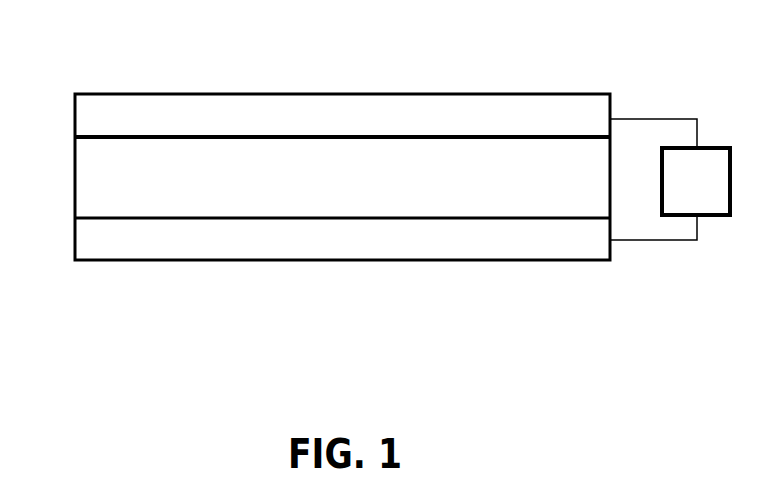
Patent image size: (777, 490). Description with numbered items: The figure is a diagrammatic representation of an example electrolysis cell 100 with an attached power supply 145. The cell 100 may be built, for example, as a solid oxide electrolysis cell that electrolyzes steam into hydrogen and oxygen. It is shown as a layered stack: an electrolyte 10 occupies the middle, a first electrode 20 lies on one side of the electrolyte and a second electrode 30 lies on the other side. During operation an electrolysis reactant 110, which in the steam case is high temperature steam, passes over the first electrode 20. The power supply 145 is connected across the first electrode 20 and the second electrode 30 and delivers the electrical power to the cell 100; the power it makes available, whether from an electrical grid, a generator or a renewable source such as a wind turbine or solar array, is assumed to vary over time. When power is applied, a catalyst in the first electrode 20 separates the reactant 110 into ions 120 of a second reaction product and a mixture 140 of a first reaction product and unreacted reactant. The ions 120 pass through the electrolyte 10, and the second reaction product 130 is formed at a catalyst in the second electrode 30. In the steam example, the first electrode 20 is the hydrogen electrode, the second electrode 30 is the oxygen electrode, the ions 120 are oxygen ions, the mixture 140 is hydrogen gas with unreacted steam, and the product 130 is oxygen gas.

The electrolysis cell 100 is at (222, 425).
The electrolyte 10 is at (342, 177).
The first electrode 20 is at (342, 121).
The second electrode 30 is at (342, 235).
The electrolysis reactant 110 is at (128, 81).
The ions 120 is at (246, 148).
The second reaction product 130 is at (385, 288).
The mixture of first reaction product and unreacted reactant 140 is at (666, 58).
The power supply 145 is at (670, 180).